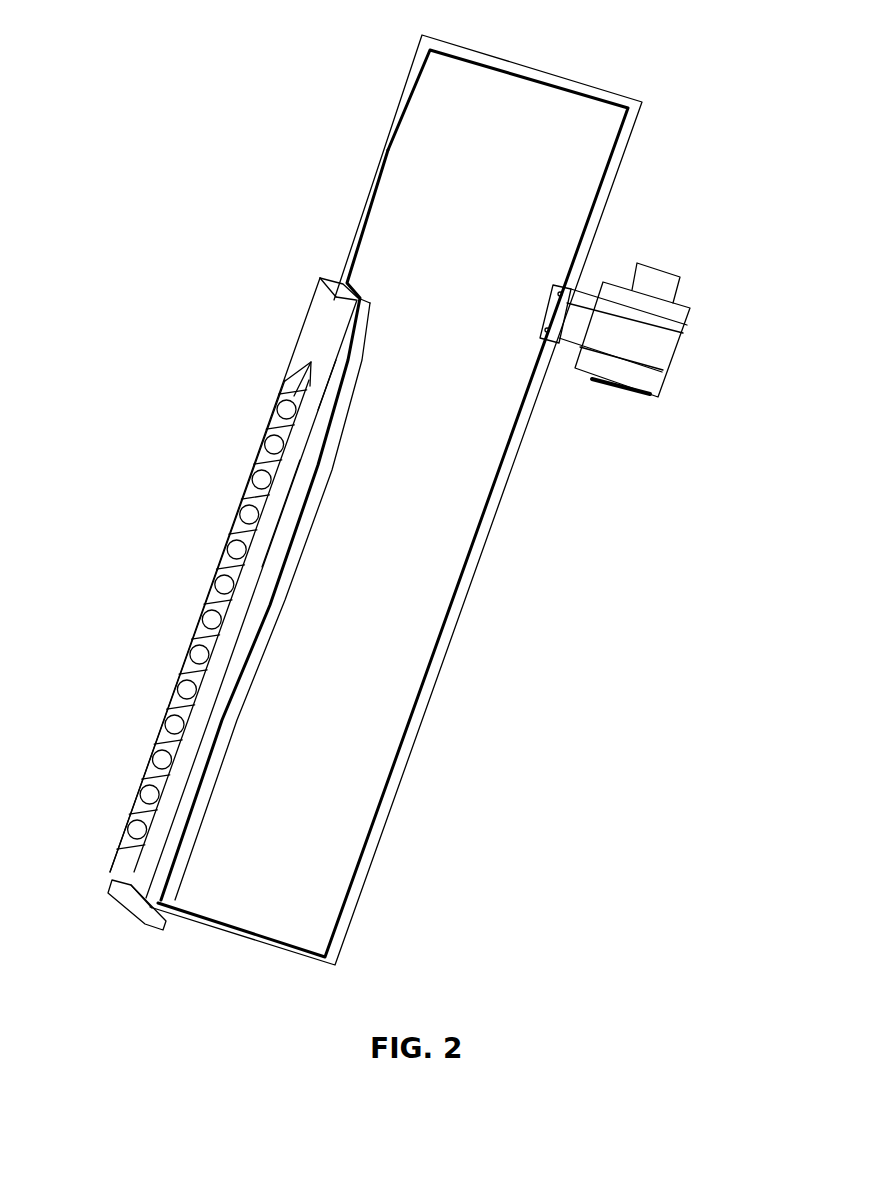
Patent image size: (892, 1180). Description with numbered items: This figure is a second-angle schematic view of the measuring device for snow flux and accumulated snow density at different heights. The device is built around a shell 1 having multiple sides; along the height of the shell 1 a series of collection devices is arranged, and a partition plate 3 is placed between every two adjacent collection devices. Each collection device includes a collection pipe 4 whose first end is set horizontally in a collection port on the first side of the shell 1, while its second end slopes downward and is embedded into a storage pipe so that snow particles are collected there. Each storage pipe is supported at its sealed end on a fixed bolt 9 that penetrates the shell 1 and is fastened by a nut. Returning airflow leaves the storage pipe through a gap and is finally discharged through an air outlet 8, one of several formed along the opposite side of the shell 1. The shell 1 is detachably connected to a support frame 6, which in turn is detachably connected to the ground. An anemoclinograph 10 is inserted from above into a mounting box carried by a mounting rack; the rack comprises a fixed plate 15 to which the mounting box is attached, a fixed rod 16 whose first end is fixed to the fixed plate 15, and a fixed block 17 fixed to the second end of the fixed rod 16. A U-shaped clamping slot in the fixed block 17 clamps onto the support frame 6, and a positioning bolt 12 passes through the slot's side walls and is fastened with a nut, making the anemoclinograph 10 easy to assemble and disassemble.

The shell 1 is at (330, 363).
The partition plate 3 is at (285, 392).
The collection pipe 4 is at (303, 383).
The support frame 6 is at (385, 158).
The air outlet 8 is at (262, 446).
The fixed bolt 9 is at (258, 520).
The anemoclinograph 10 is at (647, 278).
The positioning bolt 12 is at (555, 285).
The fixed plate 15 is at (662, 347).
The fixed rod 16 is at (571, 347).
The fixed block 17 is at (555, 315).